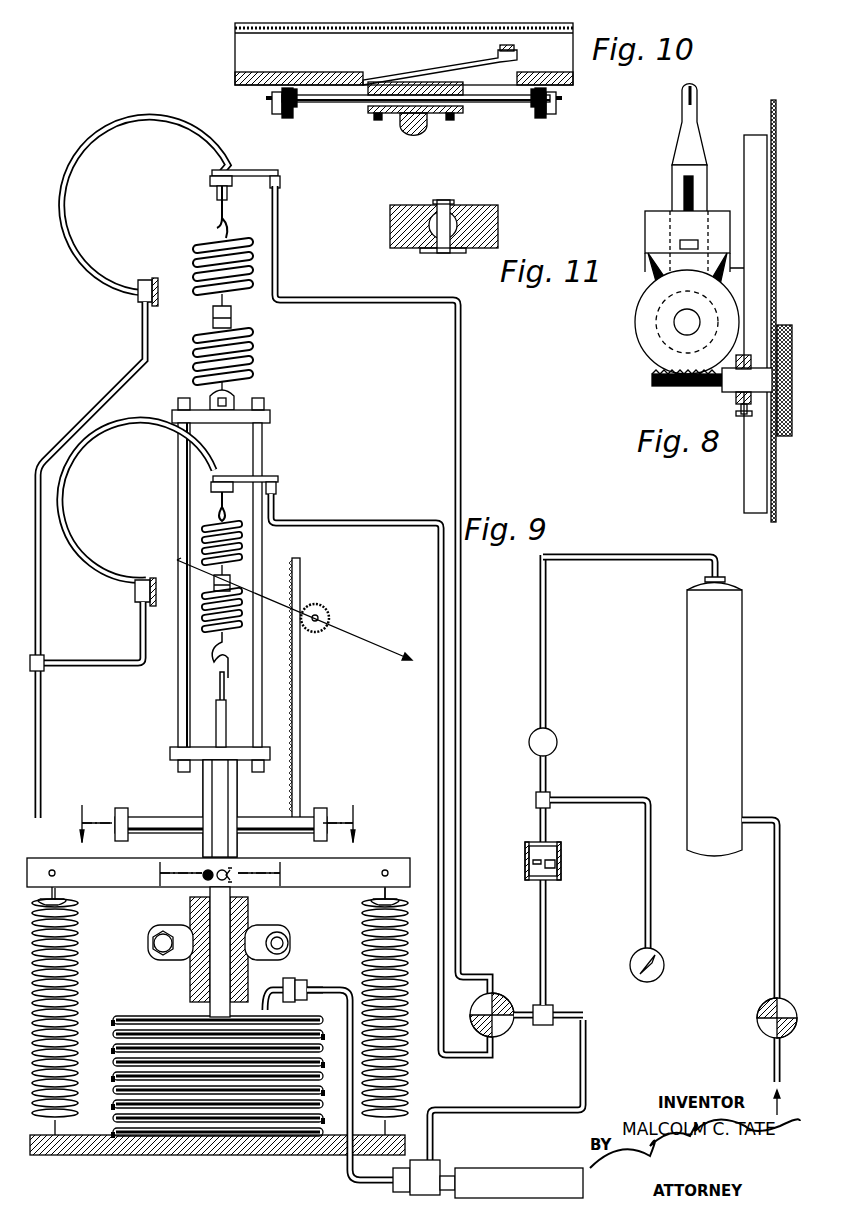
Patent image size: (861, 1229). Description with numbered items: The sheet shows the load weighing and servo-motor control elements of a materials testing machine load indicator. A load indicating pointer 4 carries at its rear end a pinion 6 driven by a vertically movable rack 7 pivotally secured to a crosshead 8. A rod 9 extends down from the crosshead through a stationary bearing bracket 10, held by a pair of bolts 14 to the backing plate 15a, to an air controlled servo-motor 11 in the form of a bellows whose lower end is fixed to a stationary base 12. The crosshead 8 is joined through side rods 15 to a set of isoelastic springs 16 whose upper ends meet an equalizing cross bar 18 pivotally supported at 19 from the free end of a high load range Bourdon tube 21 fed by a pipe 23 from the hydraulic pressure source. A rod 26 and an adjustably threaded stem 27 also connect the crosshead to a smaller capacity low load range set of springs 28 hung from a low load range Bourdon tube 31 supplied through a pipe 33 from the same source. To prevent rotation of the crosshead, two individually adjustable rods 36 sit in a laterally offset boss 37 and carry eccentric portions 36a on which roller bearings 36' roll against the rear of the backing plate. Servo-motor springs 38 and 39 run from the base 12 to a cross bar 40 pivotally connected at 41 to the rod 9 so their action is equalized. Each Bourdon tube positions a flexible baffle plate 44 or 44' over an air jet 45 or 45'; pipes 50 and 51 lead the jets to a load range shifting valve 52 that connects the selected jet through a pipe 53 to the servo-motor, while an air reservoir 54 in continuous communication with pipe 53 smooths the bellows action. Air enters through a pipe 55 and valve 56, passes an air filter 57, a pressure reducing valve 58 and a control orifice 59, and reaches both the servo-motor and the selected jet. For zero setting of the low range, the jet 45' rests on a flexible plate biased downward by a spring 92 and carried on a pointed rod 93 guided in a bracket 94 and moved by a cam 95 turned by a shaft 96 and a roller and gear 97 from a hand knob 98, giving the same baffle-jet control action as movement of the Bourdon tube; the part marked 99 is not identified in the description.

In FIG. 9, the load indicating pointer 4 is at (294, 609).
In FIG. 9, the pinion 6 is at (318, 607).
In FIG. 10, the rack 7 is at (504, 53).
In FIG. 9, the rack 7 is at (298, 680).
In FIG. 10, the crosshead 8 is at (420, 128).
In FIG. 9, the crosshead 8 is at (235, 810).
In FIG. 11, the rod 9 is at (455, 212).
In FIG. 9, the rod 9 is at (208, 1008).
In FIG. 9, the bearing bracket 10 is at (262, 910).
In FIG. 9, the servo-motor 11 is at (150, 1038).
In FIG. 9, the base 12 is at (80, 1156).
In FIG. 9, the bolts 14 is at (157, 938).
In FIG. 9, the side rods 15 is at (178, 704).
In FIG. 10, the backing plate 15a is at (338, 74).
In FIG. 8, the backing plate 15a is at (742, 149).
In FIG. 9, the springs 16 is at (255, 367).
In FIG. 9, the cross bar 18 is at (214, 208).
In FIG. 9, the pivotal support 19 is at (214, 197).
In FIG. 9, the high load range Bourdon tube 21 is at (72, 230).
In FIG. 9, the pipe 23 is at (142, 343).
In FIG. 9, the rod 26 is at (222, 730).
In FIG. 9, the adjustably threaded stem 27 is at (224, 687).
In FIG. 9, the low load range springs 28 is at (202, 545).
In FIG. 9, the low load range Bourdon tube 31 is at (73, 538).
In FIG. 9, the pipe 33 is at (140, 634).
In FIG. 10, the rods 36 is at (416, 117).
In FIG. 9, the rods 36 is at (221, 808).
In FIG. 10, the eccentric portions 36a is at (299, 107).
In FIG. 10, the roller bearings 36' is at (418, 114).
In FIG. 9, the roller bearings 36' is at (226, 807).
In FIG. 10, the boss 37 is at (394, 114).
In FIG. 9, the servo-motor spring 38 is at (75, 976).
In FIG. 9, the servo-motor spring 39 is at (367, 964).
In FIG. 11, the cross bar 40 is at (392, 225).
In FIG. 9, the cross bar 40 is at (47, 862).
In FIG. 11, the pivotal connection 41 is at (457, 200).
In FIG. 9, the pivotal connection 41 is at (233, 870).
In FIG. 9, the baffle plate 44 is at (244, 162).
In FIG. 9, the baffle plate 44' is at (258, 482).
In FIG. 9, the air jet 45 is at (294, 187).
In FIG. 9, the air jet 45' is at (297, 481).
In FIG. 9, the pipe 50 is at (460, 442).
In FIG. 9, the pipe 51 is at (418, 521).
In FIG. 9, the load range shifting valve 52 is at (510, 1034).
In FIG. 9, the pipe 53 is at (476, 1108).
In FIG. 9, the air reservoir 54 is at (520, 1174).
In FIG. 9, the pipe 55 is at (775, 1050).
In FIG. 9, the valve 56 is at (757, 1015).
In FIG. 9, the air filter 57 is at (738, 774).
In FIG. 9, the valve 58 is at (558, 742).
In FIG. 9, the control orifice 59 is at (562, 866).
In FIG. 8, the spring 92 is at (682, 186).
In FIG. 8, the pointed rod 93 is at (681, 104).
In FIG. 8, the bracket 94 is at (646, 218).
In FIG. 8, the cam 95 is at (656, 326).
In FIG. 8, the shaft 96 is at (674, 314).
In FIG. 8, the roller and gear 97 is at (650, 378).
In FIG. 8, the hand knob 98 is at (792, 326).
In FIG. 10, the frame 99 is at (432, 33).
In FIG. 8, the frame 99 is at (775, 120).